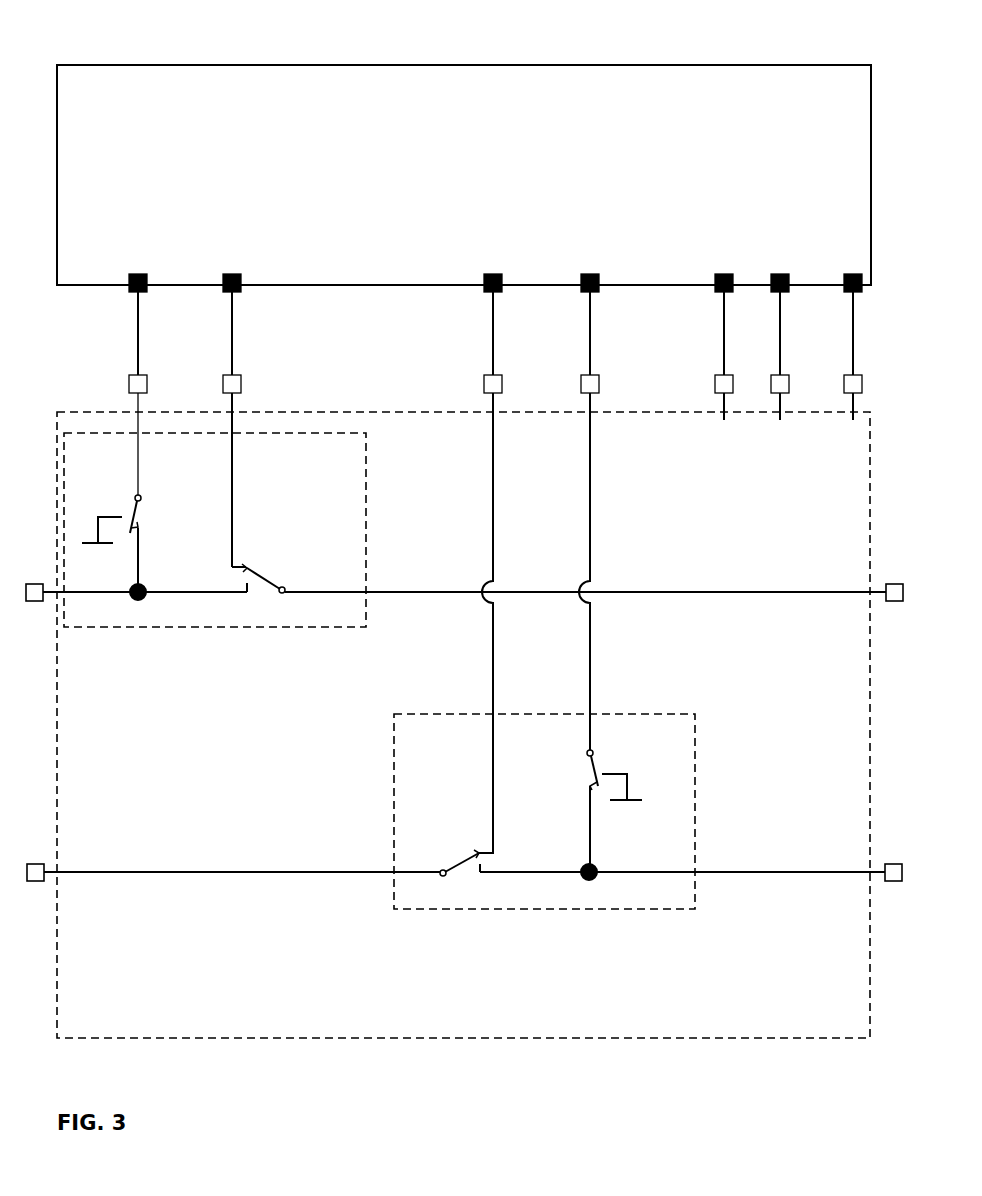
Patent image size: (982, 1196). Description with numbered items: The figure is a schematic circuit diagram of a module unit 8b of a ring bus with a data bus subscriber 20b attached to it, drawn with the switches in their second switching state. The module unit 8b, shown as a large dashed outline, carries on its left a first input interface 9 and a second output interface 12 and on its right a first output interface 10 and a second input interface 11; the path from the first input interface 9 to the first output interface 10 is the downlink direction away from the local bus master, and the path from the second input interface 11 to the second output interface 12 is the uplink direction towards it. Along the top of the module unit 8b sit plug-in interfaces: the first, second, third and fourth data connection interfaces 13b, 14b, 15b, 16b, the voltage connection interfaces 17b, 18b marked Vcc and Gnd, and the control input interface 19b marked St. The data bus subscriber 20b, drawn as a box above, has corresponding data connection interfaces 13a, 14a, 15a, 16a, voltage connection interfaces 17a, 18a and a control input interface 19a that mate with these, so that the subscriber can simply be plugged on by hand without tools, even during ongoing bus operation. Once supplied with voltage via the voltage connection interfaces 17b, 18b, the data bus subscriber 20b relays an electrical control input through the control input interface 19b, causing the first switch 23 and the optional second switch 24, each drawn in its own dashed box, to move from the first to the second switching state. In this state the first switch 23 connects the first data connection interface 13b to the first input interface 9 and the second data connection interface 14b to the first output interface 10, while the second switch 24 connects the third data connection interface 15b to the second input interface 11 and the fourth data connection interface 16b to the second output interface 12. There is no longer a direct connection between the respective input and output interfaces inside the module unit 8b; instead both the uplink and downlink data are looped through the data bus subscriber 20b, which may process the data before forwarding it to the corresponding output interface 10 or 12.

The data bus subscriber 20b is at (704, 64).
The module unit 8b is at (620, 1045).
The first switch 23 is at (202, 617).
The second switch 24 is at (543, 897).
The data connection interface 13a is at (146, 279).
The data connection interface 14a is at (240, 279).
The data connection interface 15a is at (600, 279).
The data connection interface 16a is at (503, 279).
The voltage connection interface 17a is at (734, 279).
The voltage connection interface 18a is at (789, 279).
The control input interface 19a is at (862, 280).
The first data connection interface 13b is at (146, 372).
The second data connection interface 14b is at (240, 372).
The third data connection interface 15b is at (600, 375).
The fourth data connection interface 16b is at (503, 375).
The voltage connection interface 17b is at (734, 372).
The voltage connection interface 18b is at (789, 372).
The control input interface 19b is at (860, 372).
The first input interface 9 is at (34, 584).
The first output interface 10 is at (902, 584).
The second input interface 11 is at (900, 864).
The second output interface 12 is at (34, 864).